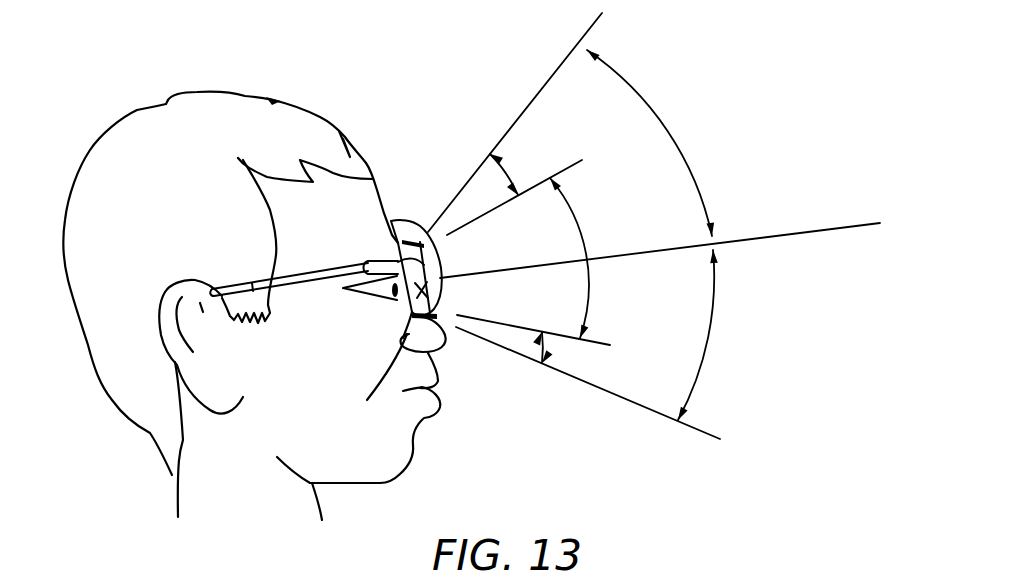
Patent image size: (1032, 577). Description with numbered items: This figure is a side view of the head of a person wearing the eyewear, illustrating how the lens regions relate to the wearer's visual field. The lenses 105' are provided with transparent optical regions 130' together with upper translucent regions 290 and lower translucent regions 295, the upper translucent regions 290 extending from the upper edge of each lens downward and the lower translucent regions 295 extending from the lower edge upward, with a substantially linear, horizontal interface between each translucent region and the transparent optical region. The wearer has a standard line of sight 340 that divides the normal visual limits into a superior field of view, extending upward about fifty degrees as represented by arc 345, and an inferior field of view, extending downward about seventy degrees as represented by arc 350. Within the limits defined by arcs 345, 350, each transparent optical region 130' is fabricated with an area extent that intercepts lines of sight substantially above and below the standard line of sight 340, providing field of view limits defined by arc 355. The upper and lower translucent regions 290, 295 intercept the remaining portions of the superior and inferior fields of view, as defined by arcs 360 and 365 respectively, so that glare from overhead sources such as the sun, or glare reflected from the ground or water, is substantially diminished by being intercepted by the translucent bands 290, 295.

The lens 105' is at (254, 306).
The transparent optical region 130' is at (361, 351).
The upper translucent region 290 is at (398, 221).
The lower translucent region 295 is at (440, 301).
The standard line of sight 340 is at (812, 227).
The arc representing superior field of view 345 is at (675, 136).
The arc representing inferior field of view 350 is at (713, 332).
The arc defining field of view limits of transparent optical region 355 is at (589, 288).
The arc defining portion of superior field of view intercepted by upper translucent 360 is at (506, 173).
The arc defining portion of inferior field of view intercepted by lower translucent 365 is at (546, 348).